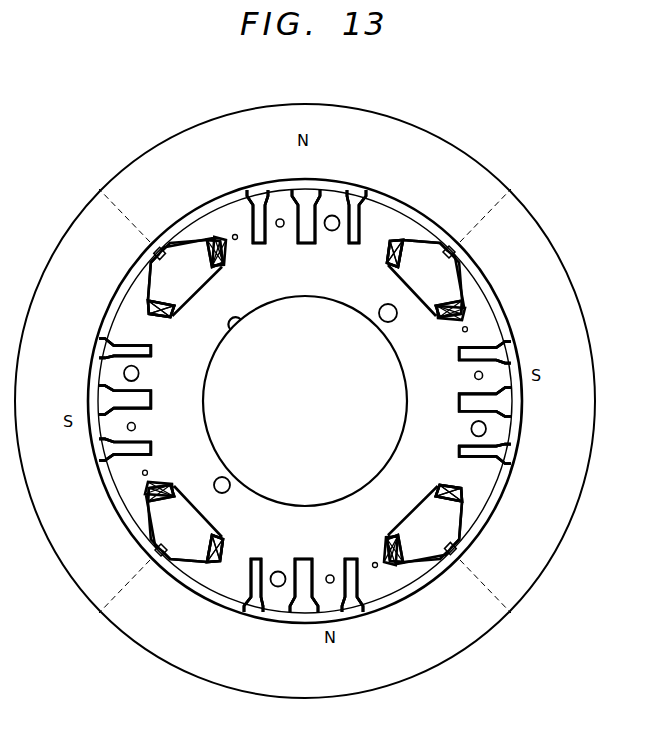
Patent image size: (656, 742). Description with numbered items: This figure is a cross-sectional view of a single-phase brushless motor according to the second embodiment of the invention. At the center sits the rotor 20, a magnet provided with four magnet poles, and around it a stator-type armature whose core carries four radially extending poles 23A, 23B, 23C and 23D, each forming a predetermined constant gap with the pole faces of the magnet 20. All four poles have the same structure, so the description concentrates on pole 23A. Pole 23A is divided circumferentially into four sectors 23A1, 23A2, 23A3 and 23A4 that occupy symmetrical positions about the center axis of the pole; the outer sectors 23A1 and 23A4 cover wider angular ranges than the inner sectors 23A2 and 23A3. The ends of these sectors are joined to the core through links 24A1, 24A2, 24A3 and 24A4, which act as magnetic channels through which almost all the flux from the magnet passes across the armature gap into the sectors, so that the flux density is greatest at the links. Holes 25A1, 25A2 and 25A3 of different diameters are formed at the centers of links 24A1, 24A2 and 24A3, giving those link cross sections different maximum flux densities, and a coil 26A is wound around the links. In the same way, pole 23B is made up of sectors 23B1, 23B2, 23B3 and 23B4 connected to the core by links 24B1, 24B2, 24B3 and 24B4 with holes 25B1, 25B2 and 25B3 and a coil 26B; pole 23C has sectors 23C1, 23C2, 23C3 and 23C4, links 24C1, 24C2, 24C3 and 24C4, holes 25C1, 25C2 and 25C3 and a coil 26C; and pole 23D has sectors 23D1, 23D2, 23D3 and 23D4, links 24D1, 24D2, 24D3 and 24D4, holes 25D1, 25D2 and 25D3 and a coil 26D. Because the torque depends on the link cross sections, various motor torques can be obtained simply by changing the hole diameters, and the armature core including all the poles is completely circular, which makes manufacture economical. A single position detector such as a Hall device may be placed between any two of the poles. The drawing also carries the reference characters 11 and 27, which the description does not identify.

The rotor bore 11 is at (280, 480).
The rotor 20 is at (478, 167).
The connecting portion 27 is at (456, 250).
The pole 23A is at (330, 180).
The sector 23A1 is at (200, 211).
The sector 23A2 is at (279, 188).
The sector 23A3 is at (376, 195).
The sector 23A4 is at (413, 220).
The pole 23B is at (520, 403).
The sector 23B1 is at (487, 285).
The sector 23B2 is at (509, 361).
The sector 23B3 is at (511, 441).
The sector 23B4 is at (488, 516).
The pole 23C is at (304, 613).
The sector 23C1 is at (414, 585).
The sector 23C2 is at (348, 612).
The sector 23C3 is at (263, 612).
The sector 23C4 is at (210, 588).
The pole 23D is at (97, 403).
The sector 23D1 is at (125, 510).
The sector 23D2 is at (98, 441).
The sector 23D3 is at (99, 360).
The sector 23D4 is at (123, 289).
The link 24A1 is at (231, 248).
The link 24A2 is at (288, 236).
The link 24A3 is at (317, 234).
The link 24A4 is at (368, 247).
The link 24B1 is at (452, 330).
The link 24B2 is at (465, 366).
The link 24B3 is at (468, 420).
The link 24B4 is at (456, 477).
The link 24C1 is at (378, 548).
The link 24C2 is at (344, 575).
The link 24C3 is at (286, 558).
The link 24C4 is at (223, 493).
The link 24D1 is at (146, 464).
The link 24D2 is at (165, 434).
The link 24D3 is at (142, 378).
The link 24D4 is at (158, 322).
The hole 25A1 is at (236, 240).
The hole 25A2 is at (277, 219).
The hole 25A3 is at (336, 218).
The hole 25B1 is at (471, 329).
The hole 25B2 is at (474, 378).
The hole 25B3 is at (470, 432).
The hole 25C1 is at (377, 566).
The hole 25C2 is at (331, 574).
The hole 25C3 is at (278, 570).
The hole 25D1 is at (138, 473).
The hole 25D2 is at (132, 423).
The hole 25D3 is at (118, 375).
The coil 26A is at (210, 248).
The coil 26B is at (452, 302).
The coil 26C is at (395, 548).
The coil 26D is at (207, 545).